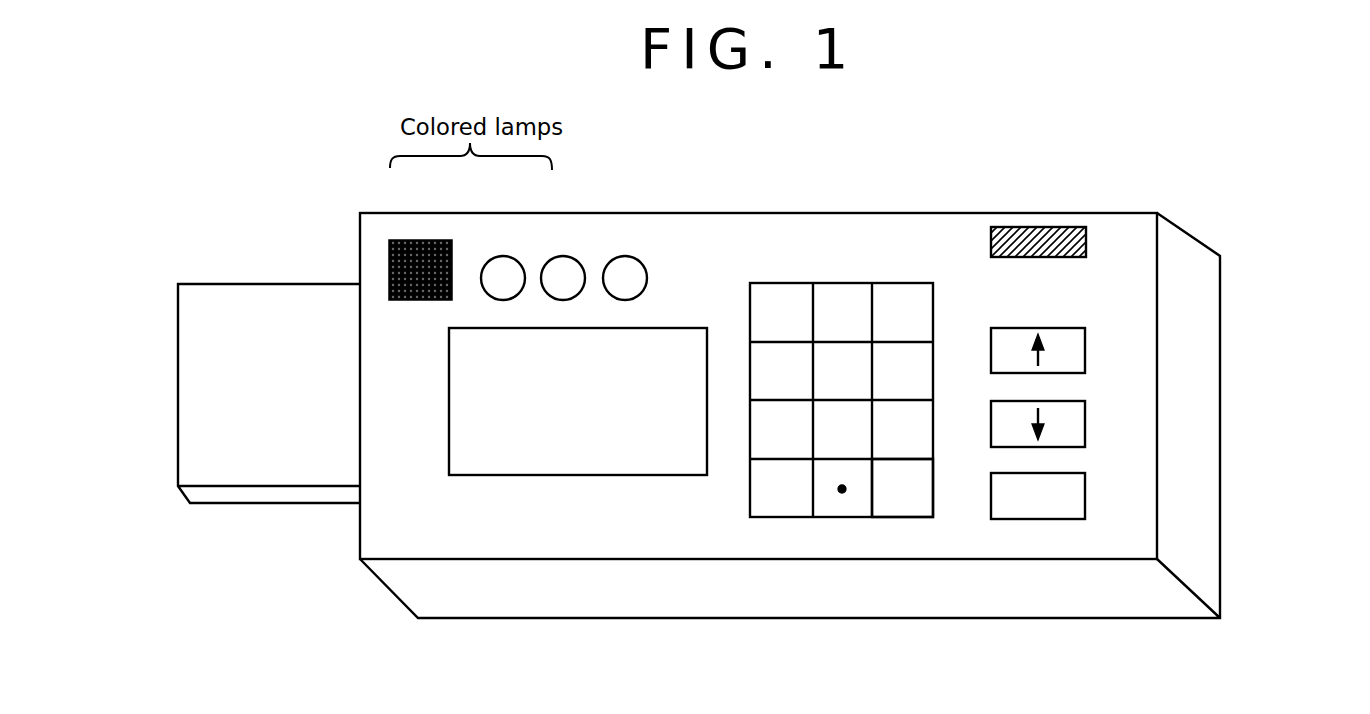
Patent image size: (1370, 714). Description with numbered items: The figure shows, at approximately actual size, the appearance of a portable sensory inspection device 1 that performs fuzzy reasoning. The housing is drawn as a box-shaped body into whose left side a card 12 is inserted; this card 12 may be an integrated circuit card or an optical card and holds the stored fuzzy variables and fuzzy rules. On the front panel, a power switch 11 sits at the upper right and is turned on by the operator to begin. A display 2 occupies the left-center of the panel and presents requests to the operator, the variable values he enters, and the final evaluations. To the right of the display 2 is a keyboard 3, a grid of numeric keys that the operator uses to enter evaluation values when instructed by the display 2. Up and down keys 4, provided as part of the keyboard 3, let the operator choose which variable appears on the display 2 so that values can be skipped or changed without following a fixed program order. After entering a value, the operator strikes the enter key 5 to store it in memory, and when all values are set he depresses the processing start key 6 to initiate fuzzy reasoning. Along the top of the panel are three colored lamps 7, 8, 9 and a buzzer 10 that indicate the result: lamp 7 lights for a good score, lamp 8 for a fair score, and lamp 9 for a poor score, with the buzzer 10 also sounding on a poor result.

The sensory inspection device 1 is at (360, 559).
The display 2 is at (587, 475).
The keyboard 3 is at (783, 283).
The up and down keys 4 is at (1098, 328).
The enter key 5 is at (1050, 519).
The processing start key 6 is at (900, 518).
The colored lamp 7 is at (488, 262).
The colored lamp 8 is at (549, 262).
The colored lamp 9 is at (611, 262).
The buzzer 10 is at (389, 250).
The power switch 11 is at (1086, 227).
The card 12 is at (310, 283).